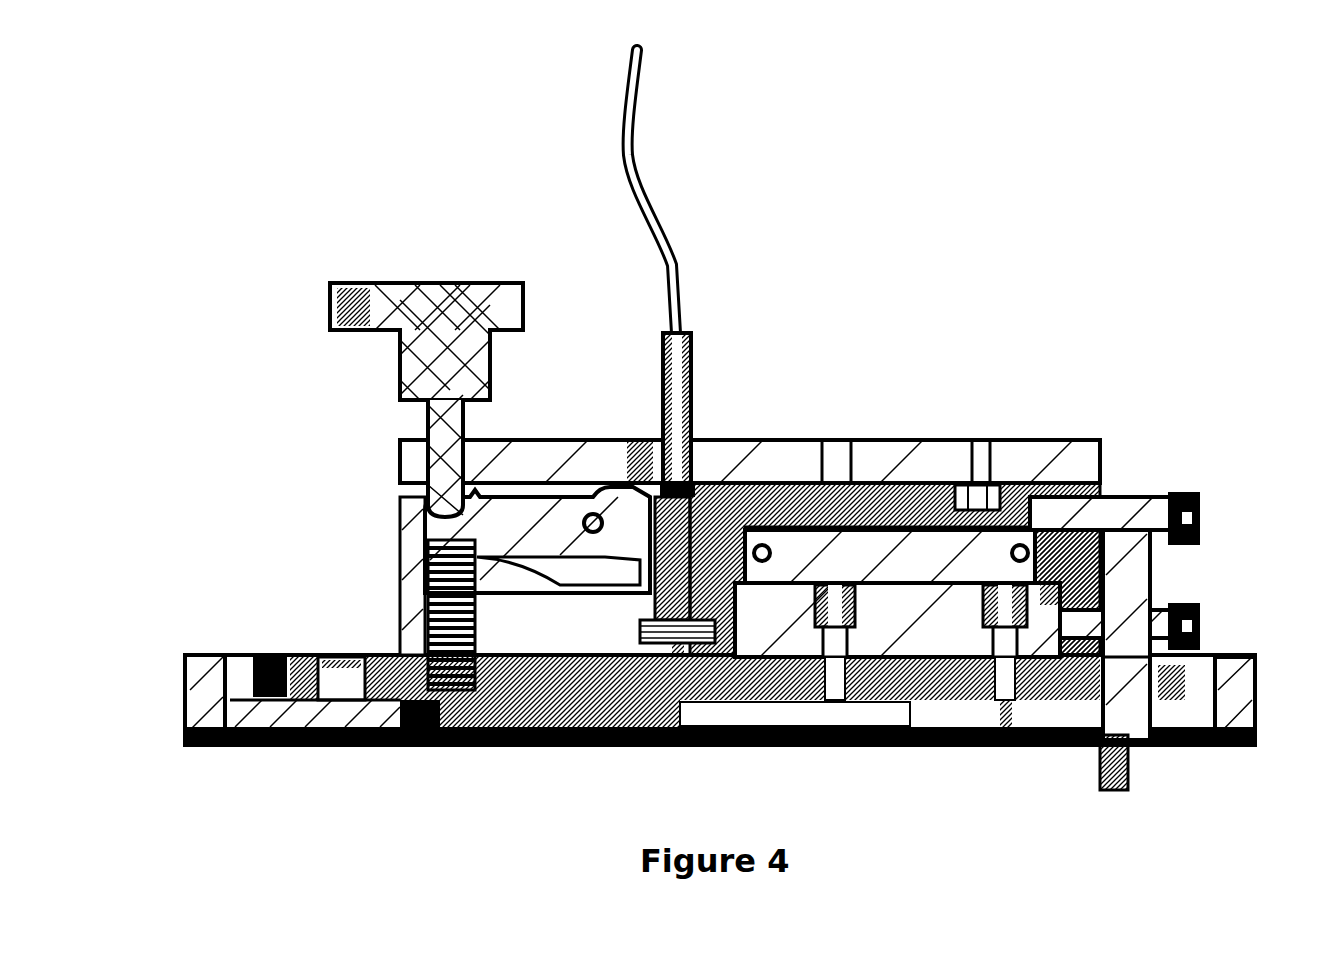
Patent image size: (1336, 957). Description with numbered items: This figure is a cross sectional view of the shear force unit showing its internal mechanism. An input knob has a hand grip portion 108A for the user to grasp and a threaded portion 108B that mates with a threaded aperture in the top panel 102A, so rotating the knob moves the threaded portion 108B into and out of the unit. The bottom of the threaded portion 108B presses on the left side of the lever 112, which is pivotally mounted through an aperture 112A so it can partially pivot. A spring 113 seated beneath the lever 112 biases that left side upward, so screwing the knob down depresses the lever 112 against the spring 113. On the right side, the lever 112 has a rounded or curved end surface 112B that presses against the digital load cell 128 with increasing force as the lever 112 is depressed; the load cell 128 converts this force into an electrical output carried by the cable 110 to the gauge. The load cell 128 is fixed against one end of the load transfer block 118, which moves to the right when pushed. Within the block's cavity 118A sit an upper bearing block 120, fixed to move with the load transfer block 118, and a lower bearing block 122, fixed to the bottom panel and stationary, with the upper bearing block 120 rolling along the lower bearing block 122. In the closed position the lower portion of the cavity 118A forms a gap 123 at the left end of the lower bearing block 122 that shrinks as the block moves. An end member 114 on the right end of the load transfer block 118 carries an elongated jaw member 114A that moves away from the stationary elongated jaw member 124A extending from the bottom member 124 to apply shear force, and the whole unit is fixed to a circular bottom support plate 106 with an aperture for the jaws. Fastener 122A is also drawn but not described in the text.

The top panel 102A is at (1027, 457).
The bottom support plate 106 is at (212, 745).
The hand grip portion 108A is at (405, 283).
The threaded portion 108B is at (422, 434).
The cable 110 is at (650, 118).
The lever 112 is at (553, 520).
The aperture 112A is at (593, 492).
The rounded or curved end surface 112B is at (640, 588).
The spring 113 is at (430, 617).
The end member 114 is at (1145, 578).
The elongated jaw member 114A is at (1128, 770).
The load transfer block 118 is at (920, 480).
The cavity 118A is at (863, 478).
The upper bearing block 120 is at (790, 565).
The lower bearing block 122 is at (878, 640).
The fastener 122A is at (836, 632).
The gap 123 is at (688, 735).
The bottom member 124 is at (928, 728).
The elongated jaw member 124A is at (1100, 775).
The digital load cell 128 is at (690, 480).